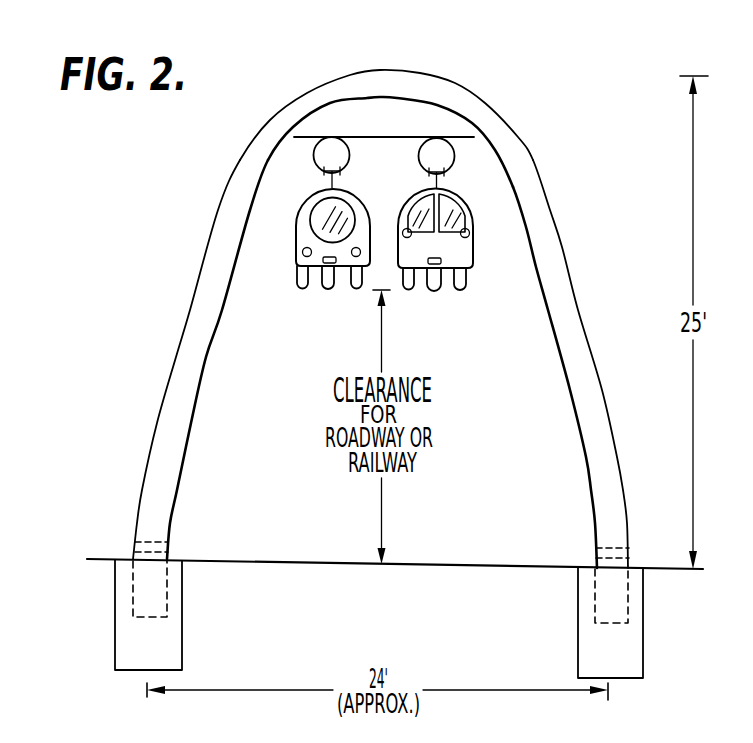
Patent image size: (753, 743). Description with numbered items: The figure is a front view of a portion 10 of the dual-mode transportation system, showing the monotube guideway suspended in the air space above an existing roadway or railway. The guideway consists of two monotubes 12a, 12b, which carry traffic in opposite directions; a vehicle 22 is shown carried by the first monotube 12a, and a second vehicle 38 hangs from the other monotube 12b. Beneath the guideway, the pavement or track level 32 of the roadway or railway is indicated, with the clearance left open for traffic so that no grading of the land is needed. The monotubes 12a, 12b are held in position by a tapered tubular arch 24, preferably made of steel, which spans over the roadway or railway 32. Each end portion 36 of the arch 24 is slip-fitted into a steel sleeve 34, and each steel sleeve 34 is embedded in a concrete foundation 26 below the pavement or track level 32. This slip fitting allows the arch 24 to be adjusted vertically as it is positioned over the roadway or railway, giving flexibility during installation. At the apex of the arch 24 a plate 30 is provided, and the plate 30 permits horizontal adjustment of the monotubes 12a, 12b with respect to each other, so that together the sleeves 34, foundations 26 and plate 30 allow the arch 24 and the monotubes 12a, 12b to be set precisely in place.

The portion of the dual-mode transportation system 10 is at (277, 69).
The monotube 12a is at (311, 162).
The monotube 12b is at (457, 157).
The vehicle 22 is at (296, 243).
The tapered tubular arch 24 is at (212, 272).
The concrete foundation 26 is at (182, 658).
The plate 30 is at (392, 112).
The pavement or track level 32 is at (330, 563).
The steel sleeve 34 is at (165, 608).
The end portion of the arch 36 is at (175, 540).
The second suspended vehicle 38 is at (475, 240).